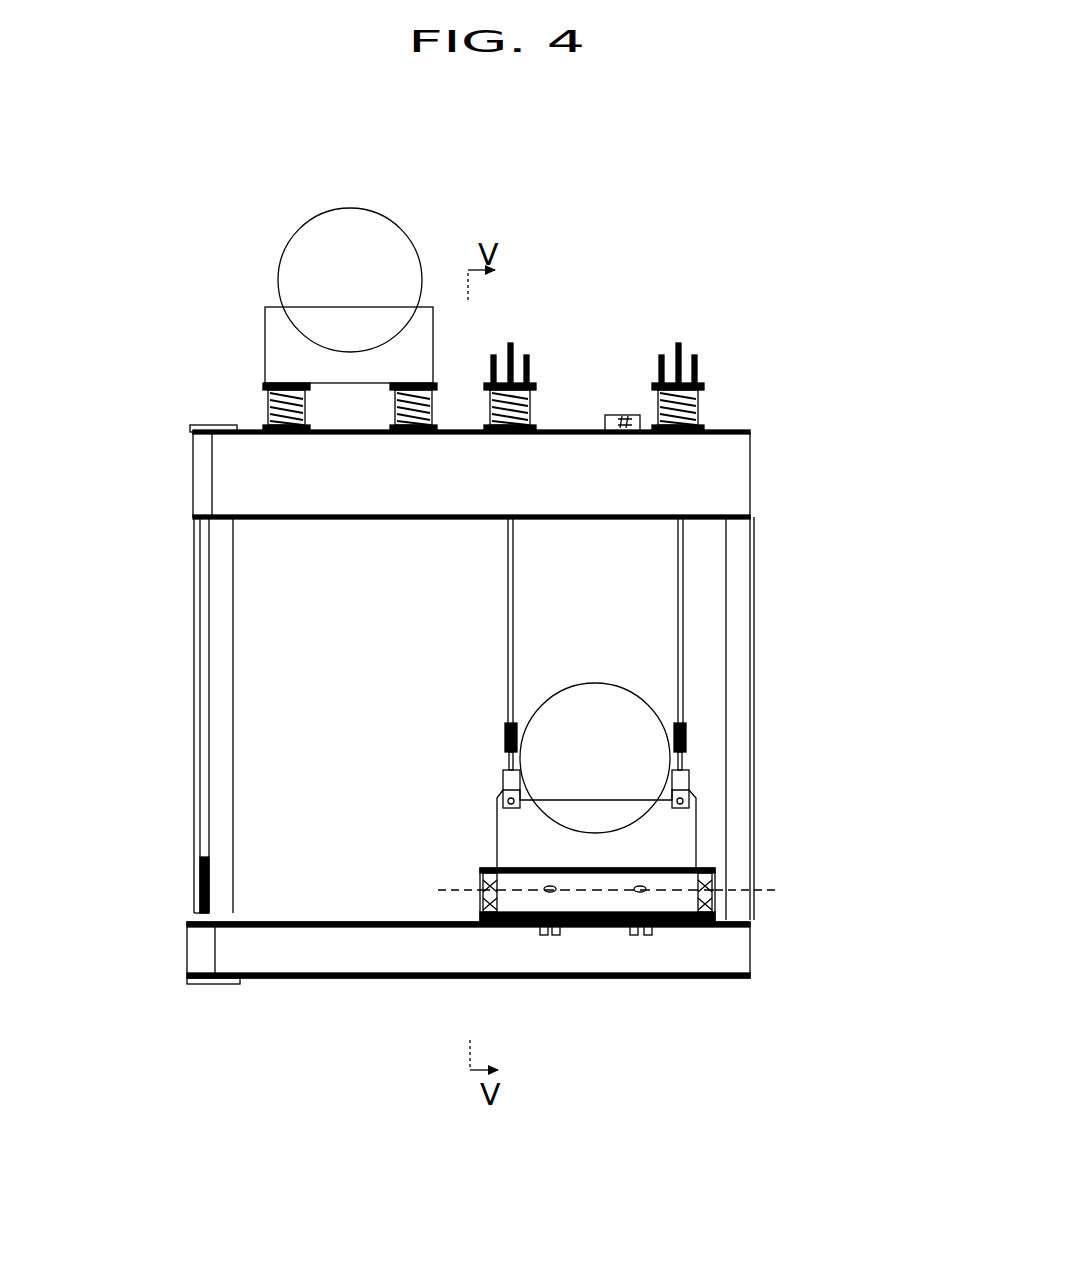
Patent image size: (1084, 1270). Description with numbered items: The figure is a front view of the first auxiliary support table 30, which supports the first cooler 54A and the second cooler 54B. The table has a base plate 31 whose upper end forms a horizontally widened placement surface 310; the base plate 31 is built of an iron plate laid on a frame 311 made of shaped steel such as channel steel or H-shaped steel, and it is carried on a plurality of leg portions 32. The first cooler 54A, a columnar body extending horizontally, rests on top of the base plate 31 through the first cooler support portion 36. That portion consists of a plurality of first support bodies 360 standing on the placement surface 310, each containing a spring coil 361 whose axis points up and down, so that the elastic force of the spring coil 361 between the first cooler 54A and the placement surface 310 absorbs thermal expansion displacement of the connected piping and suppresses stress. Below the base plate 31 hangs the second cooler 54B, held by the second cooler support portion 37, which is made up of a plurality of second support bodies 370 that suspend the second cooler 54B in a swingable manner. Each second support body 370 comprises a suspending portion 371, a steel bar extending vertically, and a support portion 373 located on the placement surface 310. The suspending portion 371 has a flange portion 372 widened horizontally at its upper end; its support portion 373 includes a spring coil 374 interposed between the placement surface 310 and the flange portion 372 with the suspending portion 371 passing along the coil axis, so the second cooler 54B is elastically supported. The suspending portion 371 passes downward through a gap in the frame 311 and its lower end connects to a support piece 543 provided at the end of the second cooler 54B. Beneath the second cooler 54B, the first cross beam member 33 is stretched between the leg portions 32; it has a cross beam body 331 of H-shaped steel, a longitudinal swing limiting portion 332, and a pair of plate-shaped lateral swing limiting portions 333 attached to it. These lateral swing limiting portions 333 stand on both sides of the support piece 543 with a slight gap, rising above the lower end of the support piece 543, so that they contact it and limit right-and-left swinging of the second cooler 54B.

The first auxiliary support table 30 is at (160, 470).
The base plate 31 is at (186, 492).
The placement surface 310 is at (331, 434).
The frame 311 is at (193, 446).
The leg portions 32 is at (216, 782).
The first cross beam member 33 is at (645, 1040).
The cross beam body 331 is at (617, 960).
The longitudinal swing limiting portion 332 is at (528, 905).
The lateral swing limiting portions 333 is at (608, 891).
The first cooler support portion 36 is at (243, 378).
The first support bodies 360 is at (265, 420).
The spring coil 361 is at (322, 434).
The second cooler support portion 37 is at (708, 338).
The second support bodies 370 is at (385, 545).
The suspending portion 371 is at (505, 600).
The flange portion 372 is at (532, 375).
The support portion 373 is at (482, 398).
The spring coil 374 is at (532, 406).
The first cooler 54A is at (392, 210).
The second cooler 54B is at (658, 688).
The support piece 543 is at (697, 828).